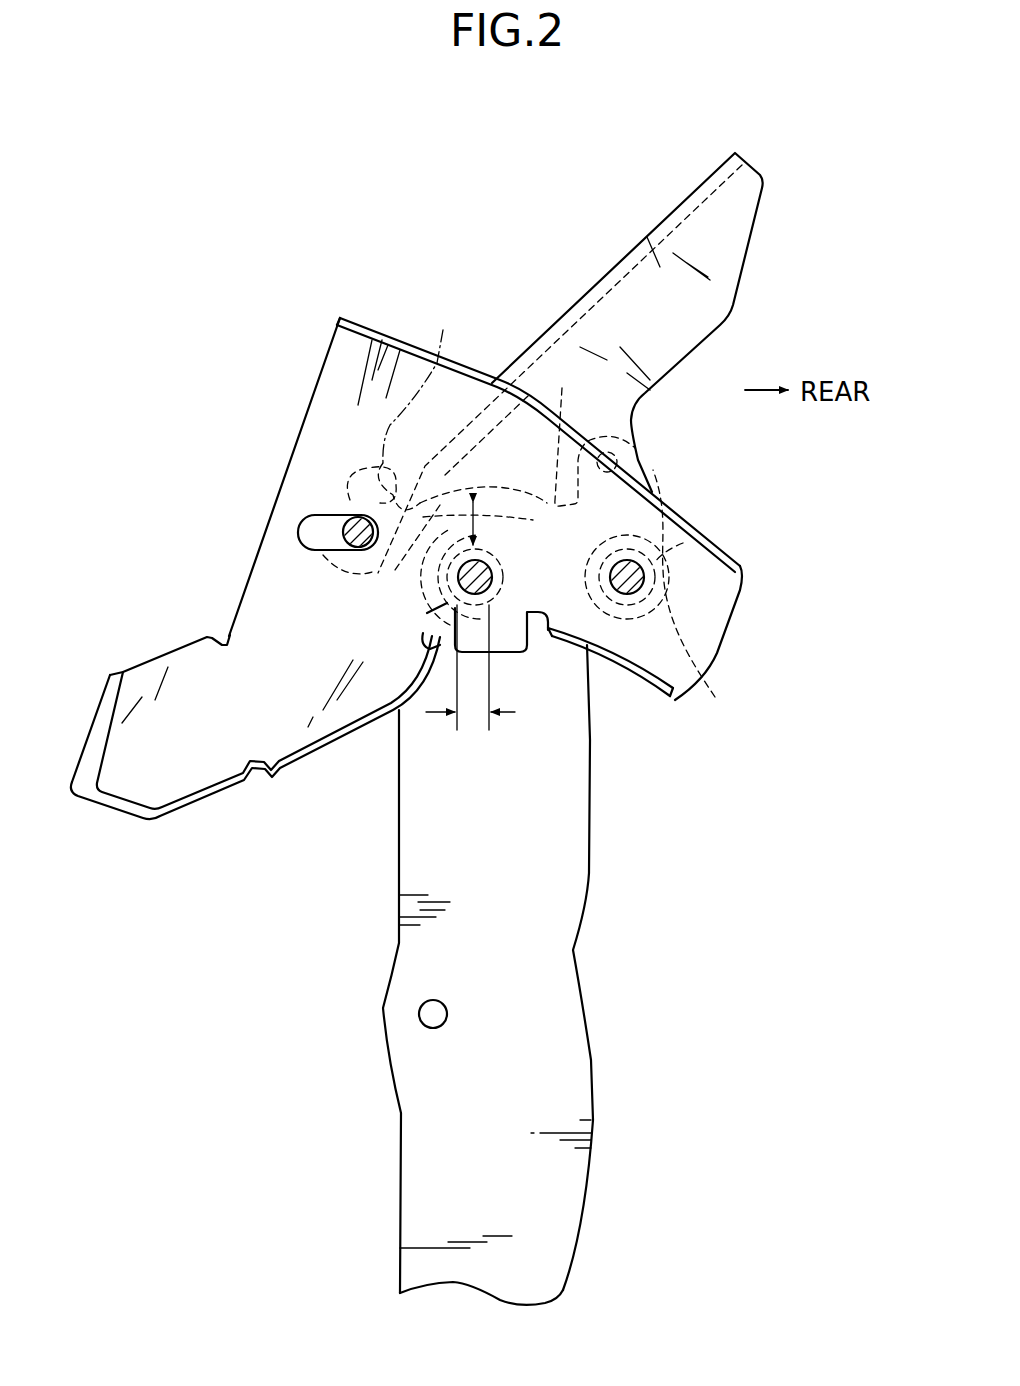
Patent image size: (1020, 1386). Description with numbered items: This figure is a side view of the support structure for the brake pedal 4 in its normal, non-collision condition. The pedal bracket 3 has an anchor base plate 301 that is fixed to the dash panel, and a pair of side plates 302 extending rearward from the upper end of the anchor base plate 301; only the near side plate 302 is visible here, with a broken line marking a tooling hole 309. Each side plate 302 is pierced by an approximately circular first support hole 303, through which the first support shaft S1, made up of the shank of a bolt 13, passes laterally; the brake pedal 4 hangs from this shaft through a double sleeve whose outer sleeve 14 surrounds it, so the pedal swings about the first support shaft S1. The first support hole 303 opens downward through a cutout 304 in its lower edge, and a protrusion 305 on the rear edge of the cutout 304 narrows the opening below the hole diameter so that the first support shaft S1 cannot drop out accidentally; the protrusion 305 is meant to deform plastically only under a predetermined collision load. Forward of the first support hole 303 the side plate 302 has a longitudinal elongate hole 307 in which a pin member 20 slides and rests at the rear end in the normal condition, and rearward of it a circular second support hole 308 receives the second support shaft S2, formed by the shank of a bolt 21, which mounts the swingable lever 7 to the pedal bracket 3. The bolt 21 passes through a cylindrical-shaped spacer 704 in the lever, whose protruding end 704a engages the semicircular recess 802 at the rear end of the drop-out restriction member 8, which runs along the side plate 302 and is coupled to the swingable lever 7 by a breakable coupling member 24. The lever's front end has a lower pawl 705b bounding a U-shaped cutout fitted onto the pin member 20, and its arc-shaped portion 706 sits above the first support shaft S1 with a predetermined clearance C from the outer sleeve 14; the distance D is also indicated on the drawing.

The pedal bracket 3 is at (250, 745).
The brake pedal 4 is at (576, 1030).
The swingable lever 7 is at (735, 245).
The drop-out restriction member 8 is at (591, 435).
The bolt 13 is at (458, 580).
The outer sleeve 14 is at (567, 640).
The pin member 20 is at (300, 525).
The bolt 21 is at (630, 600).
The coupling member 24 is at (648, 460).
The anchor base plate 301 is at (250, 745).
The side plate 302 is at (690, 623).
The first support hole 303 is at (496, 540).
The cutout 304 is at (452, 630).
The protrusion 305 is at (510, 633).
The elongate hole 307 is at (312, 515).
The second support hole 308 is at (645, 562).
The tooling hole 309 is at (438, 356).
The cylindrical-shaped spacer 704 is at (712, 685).
The protruding end 704a is at (766, 590).
The lower pawl 705b is at (300, 540).
The arc-shaped portion 706 is at (459, 483).
The semicircular-shaped recess 802 is at (683, 543).
The first support shaft S1 is at (316, 577).
The second support shaft S2 is at (653, 644).
The clearance C is at (490, 523).
The distance D is at (470, 678).